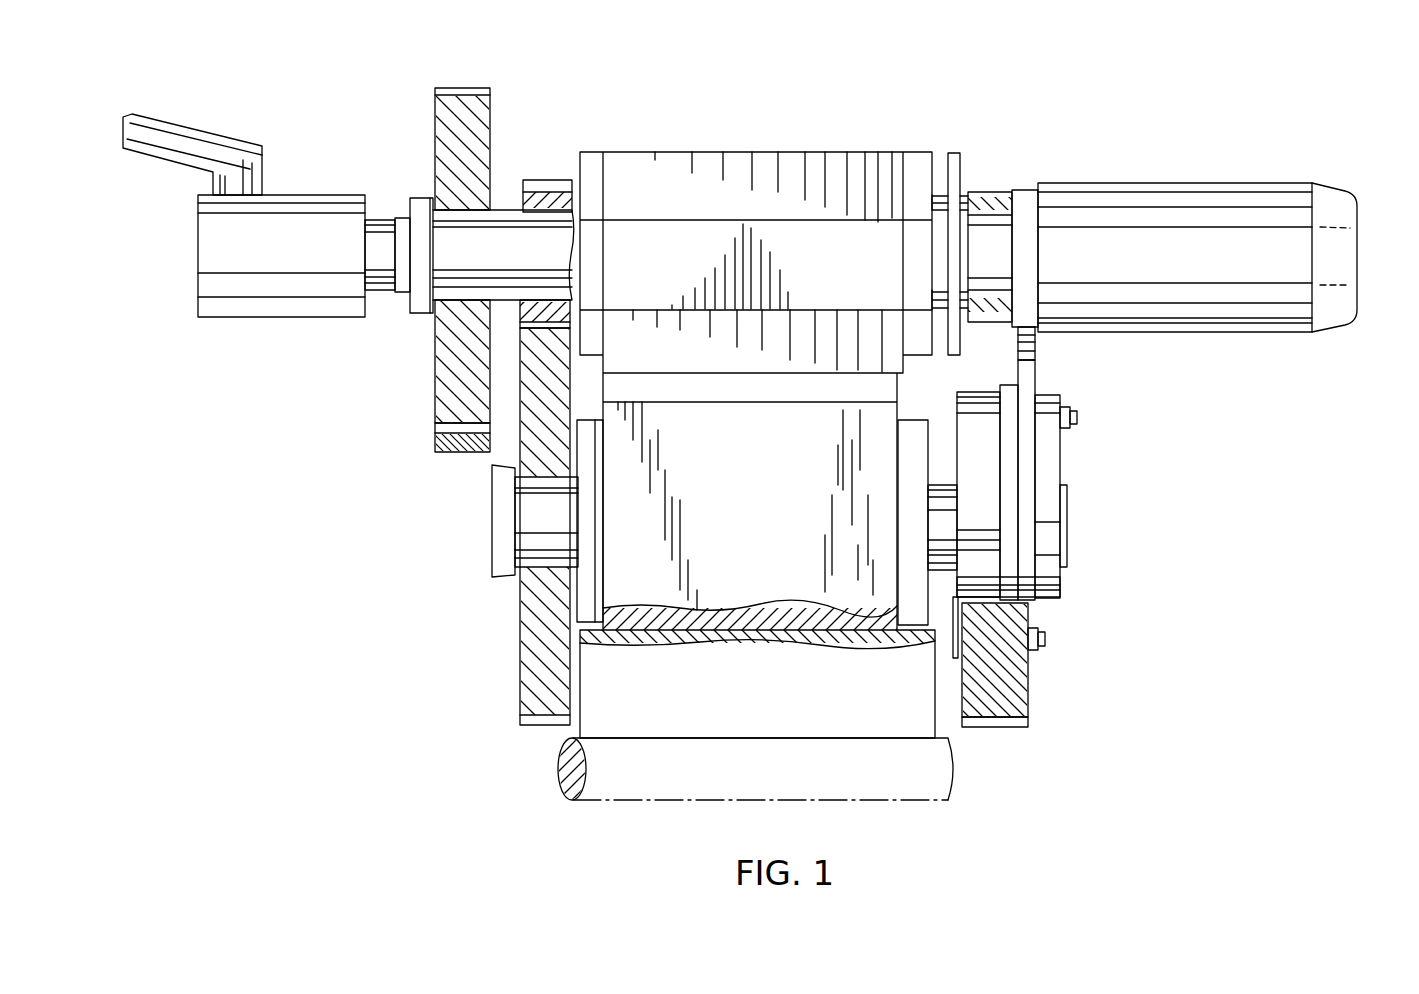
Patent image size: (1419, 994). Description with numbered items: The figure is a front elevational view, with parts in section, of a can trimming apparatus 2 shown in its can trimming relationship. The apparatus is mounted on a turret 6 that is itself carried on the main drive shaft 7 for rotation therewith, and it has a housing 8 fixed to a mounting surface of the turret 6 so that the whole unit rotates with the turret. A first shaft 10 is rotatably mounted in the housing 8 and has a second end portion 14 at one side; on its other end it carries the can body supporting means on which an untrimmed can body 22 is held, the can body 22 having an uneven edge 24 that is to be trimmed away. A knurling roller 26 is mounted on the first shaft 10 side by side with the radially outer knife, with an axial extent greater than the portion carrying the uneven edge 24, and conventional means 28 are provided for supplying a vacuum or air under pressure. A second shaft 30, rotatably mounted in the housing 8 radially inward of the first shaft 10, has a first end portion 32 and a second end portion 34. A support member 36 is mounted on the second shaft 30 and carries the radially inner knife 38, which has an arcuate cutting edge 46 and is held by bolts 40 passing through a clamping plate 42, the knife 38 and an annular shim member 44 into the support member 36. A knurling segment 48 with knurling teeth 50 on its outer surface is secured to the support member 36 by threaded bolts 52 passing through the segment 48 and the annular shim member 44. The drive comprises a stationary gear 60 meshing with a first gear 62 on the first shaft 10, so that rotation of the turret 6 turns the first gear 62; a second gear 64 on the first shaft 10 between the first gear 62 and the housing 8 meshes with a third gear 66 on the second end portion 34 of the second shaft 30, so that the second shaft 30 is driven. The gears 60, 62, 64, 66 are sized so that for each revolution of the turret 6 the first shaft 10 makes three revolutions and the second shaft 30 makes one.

The can trimming apparatus 2 is at (1144, 216).
The turret 6 is at (758, 713).
The main drive shaft 7 is at (757, 788).
The housing 8 is at (738, 160).
The first shaft 10 is at (500, 222).
The second end portion 14 is at (278, 261).
The untrimmed can body 22 is at (1275, 183).
The uneven edge 24 is at (1006, 192).
The knurling roller 26 is at (988, 192).
The conventional means 28 is at (225, 336).
The second shaft 30 is at (937, 483).
The first end portion 32 is at (1087, 492).
The second end portion 34 is at (468, 541).
The support member 36 is at (980, 390).
The radially inner knife 38 is at (1027, 373).
The bolts 40 is at (1077, 420).
The clamping plate 42 is at (1052, 460).
The annular shim member 44 is at (1003, 588).
The arcuate cutting edge 46 is at (1035, 342).
The knurling segment 48 is at (1028, 697).
The knurling teeth 50 is at (996, 727).
The threaded bolts 52 is at (1045, 638).
The stationary gear 60 is at (451, 453).
The first gear 62 is at (483, 90).
The second gear 64 is at (551, 190).
The third gear 66 is at (518, 677).